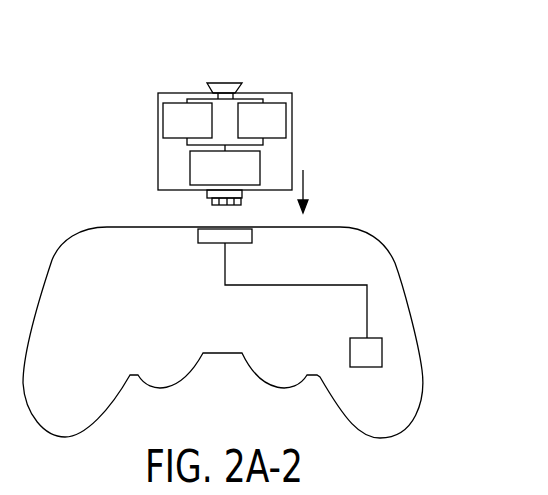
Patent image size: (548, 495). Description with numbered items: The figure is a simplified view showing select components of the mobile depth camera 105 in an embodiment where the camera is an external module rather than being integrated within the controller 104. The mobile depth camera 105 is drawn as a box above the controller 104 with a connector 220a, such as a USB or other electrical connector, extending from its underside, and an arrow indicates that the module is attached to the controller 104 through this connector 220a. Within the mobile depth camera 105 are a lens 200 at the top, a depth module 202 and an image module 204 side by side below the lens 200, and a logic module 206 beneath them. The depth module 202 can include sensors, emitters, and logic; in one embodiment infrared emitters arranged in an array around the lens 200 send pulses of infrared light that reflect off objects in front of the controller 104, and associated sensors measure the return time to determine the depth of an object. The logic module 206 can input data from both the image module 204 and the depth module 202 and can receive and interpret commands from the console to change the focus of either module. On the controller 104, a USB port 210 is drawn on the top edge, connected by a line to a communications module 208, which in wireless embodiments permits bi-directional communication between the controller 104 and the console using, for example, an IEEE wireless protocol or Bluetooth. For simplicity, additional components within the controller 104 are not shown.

The controller 104 is at (412, 320).
The mobile depth camera 105 is at (168, 93).
The lens 200 is at (223, 83).
The depth module 202 is at (163, 118).
The image module 204 is at (292, 117).
The logic module 206 is at (260, 167).
The communications module 208 is at (358, 338).
The USB port 210 is at (198, 235).
The connector 220a is at (207, 196).